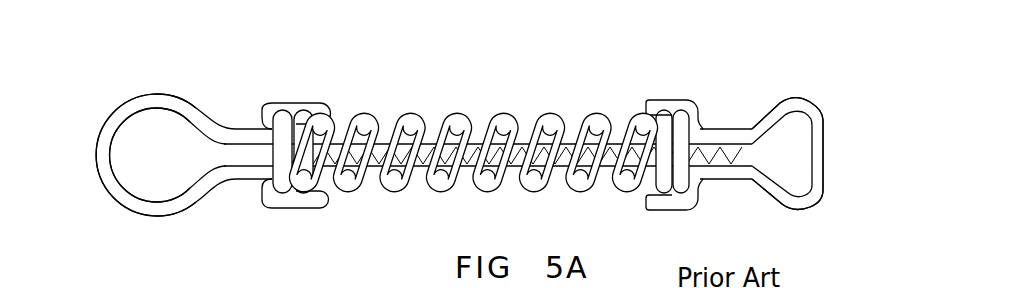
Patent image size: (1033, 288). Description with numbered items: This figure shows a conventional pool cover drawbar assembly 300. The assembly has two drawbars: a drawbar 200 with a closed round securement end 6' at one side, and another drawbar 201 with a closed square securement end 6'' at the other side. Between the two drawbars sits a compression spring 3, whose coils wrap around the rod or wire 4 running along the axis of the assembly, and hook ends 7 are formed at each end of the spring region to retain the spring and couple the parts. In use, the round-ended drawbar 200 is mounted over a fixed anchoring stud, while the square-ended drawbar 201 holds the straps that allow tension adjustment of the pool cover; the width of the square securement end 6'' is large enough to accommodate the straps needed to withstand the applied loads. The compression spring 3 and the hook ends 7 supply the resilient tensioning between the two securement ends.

The drawbar assembly 300 is at (112, 36).
The drawbar 200 is at (158, 220).
The drawbar 201 is at (829, 111).
The closed round securement end 6' is at (140, 182).
The closed square securement end 6'' is at (815, 160).
The compression spring 3 is at (462, 112).
The wire rod 4 is at (238, 166).
The hook ends 7 is at (304, 101).